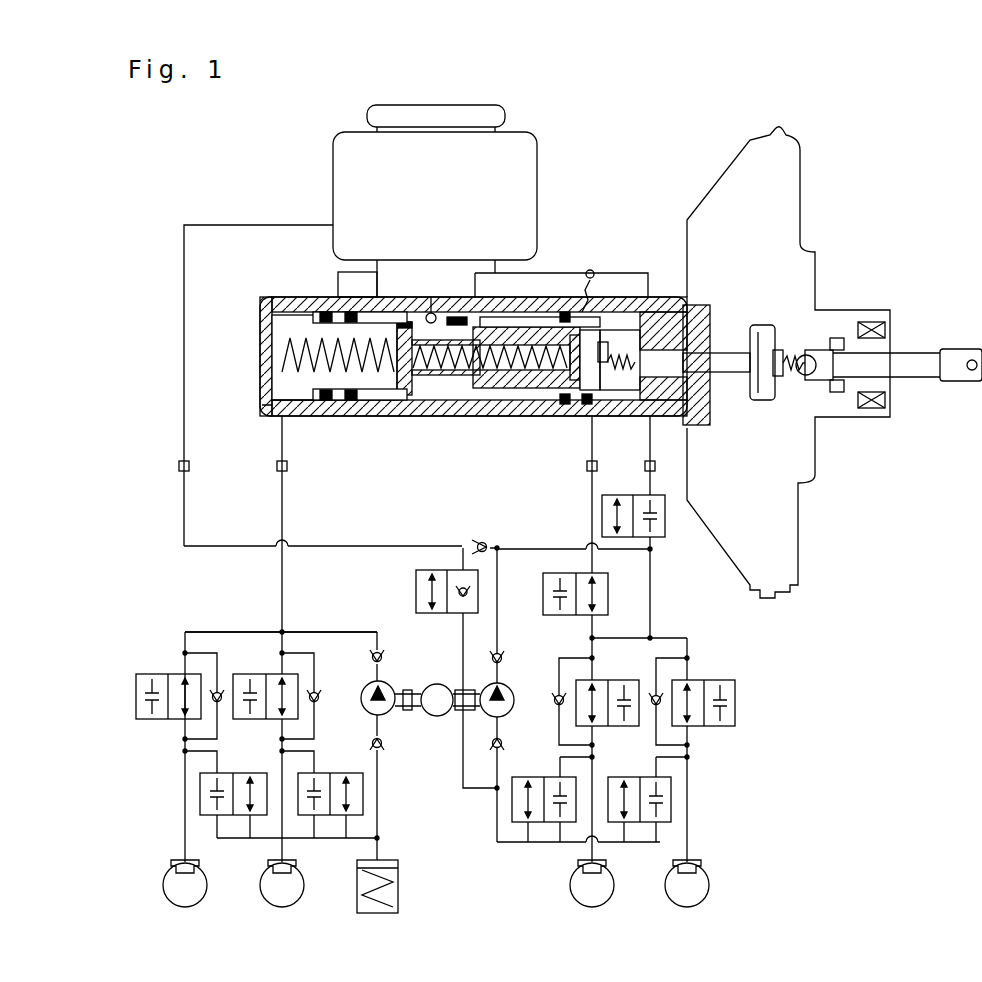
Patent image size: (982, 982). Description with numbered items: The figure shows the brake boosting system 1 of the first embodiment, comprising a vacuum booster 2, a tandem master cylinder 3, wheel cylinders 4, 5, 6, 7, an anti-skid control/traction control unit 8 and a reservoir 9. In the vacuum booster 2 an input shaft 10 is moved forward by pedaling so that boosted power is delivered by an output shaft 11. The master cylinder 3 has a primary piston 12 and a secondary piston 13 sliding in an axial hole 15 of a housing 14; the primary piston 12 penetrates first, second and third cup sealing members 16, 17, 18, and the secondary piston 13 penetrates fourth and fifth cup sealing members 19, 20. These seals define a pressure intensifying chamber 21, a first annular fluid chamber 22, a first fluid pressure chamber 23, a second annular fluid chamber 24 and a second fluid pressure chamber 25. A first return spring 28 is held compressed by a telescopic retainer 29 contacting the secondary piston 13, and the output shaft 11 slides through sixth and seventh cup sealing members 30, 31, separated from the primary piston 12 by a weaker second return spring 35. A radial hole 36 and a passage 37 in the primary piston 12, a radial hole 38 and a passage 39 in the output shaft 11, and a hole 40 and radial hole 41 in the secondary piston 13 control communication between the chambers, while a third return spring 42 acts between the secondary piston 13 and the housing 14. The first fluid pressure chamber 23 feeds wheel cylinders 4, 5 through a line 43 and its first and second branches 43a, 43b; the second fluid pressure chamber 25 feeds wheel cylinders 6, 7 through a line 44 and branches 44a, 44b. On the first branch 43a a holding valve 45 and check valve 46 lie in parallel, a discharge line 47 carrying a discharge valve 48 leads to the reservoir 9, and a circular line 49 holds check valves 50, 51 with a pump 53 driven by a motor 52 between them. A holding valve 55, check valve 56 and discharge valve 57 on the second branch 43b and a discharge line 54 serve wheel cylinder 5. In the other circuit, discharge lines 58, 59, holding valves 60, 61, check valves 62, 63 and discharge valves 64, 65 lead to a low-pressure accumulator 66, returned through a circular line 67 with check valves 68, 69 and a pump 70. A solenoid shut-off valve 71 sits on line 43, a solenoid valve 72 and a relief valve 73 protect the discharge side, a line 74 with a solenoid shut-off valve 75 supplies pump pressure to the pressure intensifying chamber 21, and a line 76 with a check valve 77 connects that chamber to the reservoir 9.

The brake boosting system 1 is at (143, 231).
The vacuum booster 2 is at (802, 190).
The master cylinder 3 is at (297, 292).
The wheel cylinder 4 is at (701, 866).
The wheel cylinder 5 is at (578, 866).
The wheel cylinder 6 is at (296, 866).
The wheel cylinder 7 is at (171, 866).
The anti-skid control/traction control unit 8 is at (780, 694).
The reservoir 9 is at (536, 158).
The input shaft 10 is at (928, 380).
The output shaft 11 is at (742, 352).
The primary piston 12 is at (532, 388).
The secondary piston 13 is at (405, 396).
The housing 14 is at (270, 370).
The axial hole 15 is at (429, 312).
The first cup sealing member 16 is at (590, 392).
The second cup sealing member 17 is at (573, 382).
The third cup sealing member 18 is at (466, 376).
The fourth cup sealing member 19 is at (380, 400).
The fifth cup sealing member 20 is at (326, 400).
The pressure intensifying chamber 21 is at (665, 320).
The first annular fluid chamber 22 is at (548, 312).
The first fluid pressure chamber 23 is at (403, 322).
The second annular fluid chamber 24 is at (351, 400).
The second fluid pressure chamber 25 is at (283, 338).
The first return spring 28 is at (445, 376).
The telescopic retainer 29 is at (500, 400).
The sixth cup sealing member 30 is at (632, 330).
The seventh cup sealing member 31 is at (592, 404).
The second return spring 35 is at (572, 404).
The radial hole 36 is at (455, 317).
The passage 37 is at (622, 355).
The radial hole 38 is at (627, 342).
The passage 39 is at (696, 424).
The hole 40 is at (351, 312).
The radial hole 41 is at (326, 312).
The third return spring 42 is at (274, 398).
The line 43 is at (488, 452).
The first branch 43a is at (688, 780).
The second branch 43b is at (593, 780).
The line 44 is at (283, 512).
The first branch 44a is at (282, 760).
The second branch 44b is at (185, 818).
The holding valve 45 is at (720, 680).
The check valve 46 is at (652, 694).
The discharge line 47 is at (184, 512).
The discharge valve 48 is at (656, 838).
The circular line 49 is at (540, 549).
The check valve 50 is at (502, 741).
The check valve 51 is at (502, 656).
The motor 52 is at (435, 716).
The pump 53 is at (510, 690).
The discharge line 54 is at (560, 770).
The holding valve 55 is at (612, 680).
The check valve 56 is at (556, 694).
The discharge valve 57 is at (526, 777).
The discharge line 58 is at (320, 773).
The discharge line 59 is at (233, 835).
The holding valve 60 is at (255, 674).
The holding valve 61 is at (148, 674).
The check valve 62 is at (318, 692).
The check valve 63 is at (217, 690).
The discharge valve 64 is at (346, 838).
The discharge valve 65 is at (250, 838).
The low-pressure accumulator 66 is at (398, 886).
The circular line 67 is at (320, 632).
The check valve 68 is at (381, 747).
The check valve 69 is at (384, 652).
The pump 70 is at (368, 712).
The solenoid shut-off valve 71 is at (608, 600).
The solenoid valve 72 is at (416, 598).
The relief valve 73 is at (481, 542).
The line 74 is at (651, 466).
The solenoid shut-off valve 75 is at (620, 495).
The line 76 is at (563, 312).
The check valve 77 is at (590, 270).